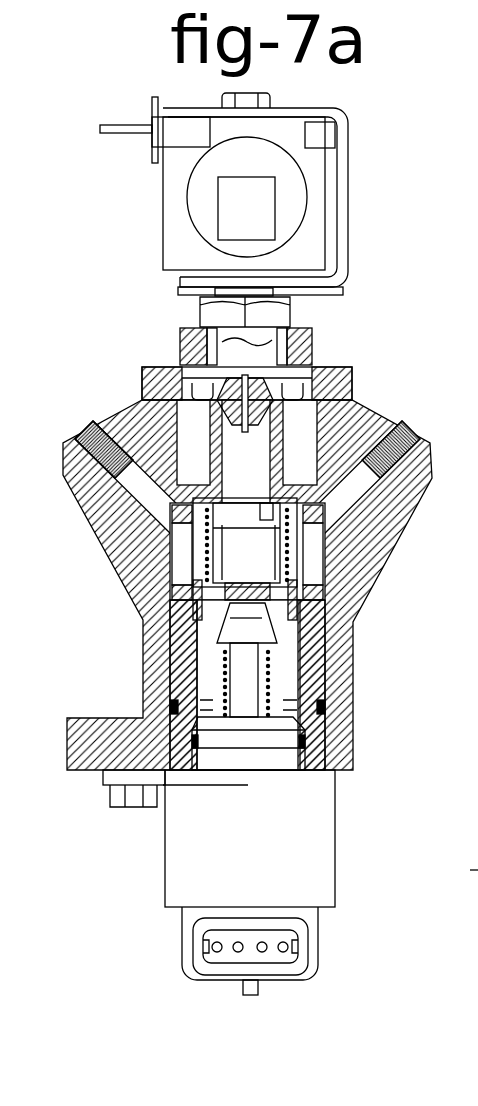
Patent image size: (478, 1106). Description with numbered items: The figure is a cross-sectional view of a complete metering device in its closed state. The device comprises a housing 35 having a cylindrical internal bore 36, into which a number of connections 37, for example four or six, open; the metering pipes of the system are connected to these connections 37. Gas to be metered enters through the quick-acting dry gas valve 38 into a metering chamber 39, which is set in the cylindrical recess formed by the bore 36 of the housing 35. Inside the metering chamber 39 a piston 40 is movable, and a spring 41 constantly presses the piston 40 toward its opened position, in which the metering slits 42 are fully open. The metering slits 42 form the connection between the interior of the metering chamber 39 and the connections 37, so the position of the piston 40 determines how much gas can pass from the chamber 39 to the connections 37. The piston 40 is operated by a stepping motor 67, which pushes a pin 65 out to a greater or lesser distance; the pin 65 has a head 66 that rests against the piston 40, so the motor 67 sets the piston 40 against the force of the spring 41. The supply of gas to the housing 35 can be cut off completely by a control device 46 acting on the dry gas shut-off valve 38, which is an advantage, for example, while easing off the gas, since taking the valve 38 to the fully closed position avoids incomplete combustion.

The housing 35 is at (254, 655).
The cylindrical internal bore 36 is at (327, 617).
The connections 37 is at (143, 507).
The quick-acting dry gas valve 38 is at (287, 377).
The metering chamber 39 is at (243, 556).
The piston 40 is at (177, 618).
The spring 41 is at (125, 556).
The metering slits 42 is at (130, 583).
The control device 46 is at (358, 227).
The pin 65 is at (247, 687).
The head 66 is at (258, 628).
The stepping motor 67 is at (150, 858).